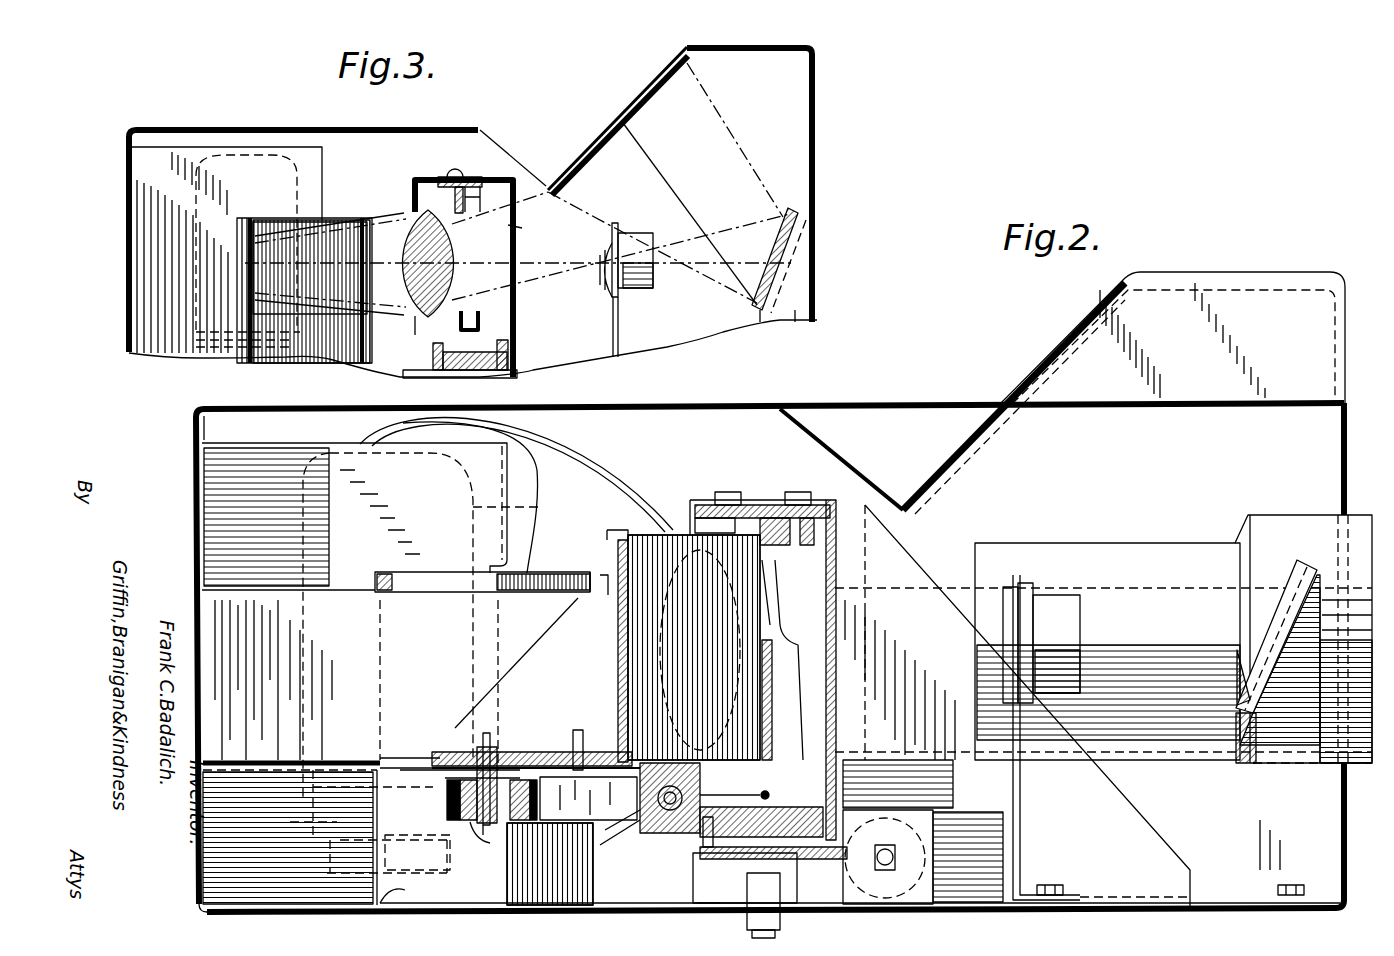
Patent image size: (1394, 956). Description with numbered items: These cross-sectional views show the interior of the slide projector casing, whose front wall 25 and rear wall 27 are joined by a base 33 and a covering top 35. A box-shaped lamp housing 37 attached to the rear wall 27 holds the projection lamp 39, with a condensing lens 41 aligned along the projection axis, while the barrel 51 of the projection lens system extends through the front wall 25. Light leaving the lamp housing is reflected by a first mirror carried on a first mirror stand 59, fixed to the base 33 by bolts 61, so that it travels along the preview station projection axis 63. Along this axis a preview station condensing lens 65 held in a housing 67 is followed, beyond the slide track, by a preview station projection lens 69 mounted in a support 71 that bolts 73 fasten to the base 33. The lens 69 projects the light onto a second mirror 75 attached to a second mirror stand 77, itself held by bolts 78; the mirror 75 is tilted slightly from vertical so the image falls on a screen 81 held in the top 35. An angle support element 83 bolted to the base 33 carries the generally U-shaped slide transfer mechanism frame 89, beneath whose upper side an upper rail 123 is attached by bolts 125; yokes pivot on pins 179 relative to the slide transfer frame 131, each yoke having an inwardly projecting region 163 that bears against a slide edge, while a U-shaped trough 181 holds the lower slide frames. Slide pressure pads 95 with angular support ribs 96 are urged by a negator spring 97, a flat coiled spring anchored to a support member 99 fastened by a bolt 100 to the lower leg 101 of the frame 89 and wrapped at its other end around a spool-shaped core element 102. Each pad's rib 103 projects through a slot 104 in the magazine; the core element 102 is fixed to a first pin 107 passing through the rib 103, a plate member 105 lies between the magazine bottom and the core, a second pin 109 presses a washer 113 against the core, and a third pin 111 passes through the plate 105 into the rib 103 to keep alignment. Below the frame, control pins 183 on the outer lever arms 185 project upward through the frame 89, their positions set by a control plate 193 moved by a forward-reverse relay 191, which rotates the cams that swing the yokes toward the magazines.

In FIG. 3, the front wall 25 is at (816, 208).
In FIG. 2, the front wall 25 is at (1347, 482).
In FIG. 3, the rear wall 27 is at (126, 206).
In FIG. 2, the rear wall 27 is at (190, 493).
In FIG. 2, the base 33 is at (993, 910).
In FIG. 3, the top 35 is at (390, 128).
In FIG. 2, the top 35 is at (780, 403).
In FIG. 2, the lamp housing 37 is at (315, 432).
In FIG. 3, the projection lamp 39 is at (305, 190).
In FIG. 2, the projection lamp 39 is at (480, 503).
In FIG. 2, the condensing lens 41 is at (546, 574).
In FIG. 2, the barrel 51 is at (1184, 543).
In FIG. 3, the first mirror stand 59 is at (372, 352).
In FIG. 2, the first mirror stand 59 is at (428, 574).
In FIG. 2, the bolts 61 is at (390, 898).
In FIG. 3, the preview station projection axis 63 is at (478, 270).
In FIG. 3, the preview station condensing lens 65 is at (452, 250).
In FIG. 2, the preview station condensing lens 65 is at (640, 685).
In FIG. 3, the housing 67 is at (428, 180).
In FIG. 3, the preview station projection lens 69 is at (645, 290).
In FIG. 2, the preview station projection lens 69 is at (1058, 597).
In FIG. 3, the support 71 is at (618, 340).
In FIG. 2, the support 71 is at (1022, 823).
In FIG. 2, the bolts 73 is at (1048, 884).
In FIG. 3, the second mirror 75 is at (757, 306).
In FIG. 2, the second mirror 75 is at (1318, 546).
In FIG. 3, the second mirror stand 77 is at (790, 325).
In FIG. 2, the second mirror stand 77 is at (1262, 800).
In FIG. 2, the bolts 78 is at (1280, 884).
In FIG. 3, the screen 81 is at (657, 85).
In FIG. 2, the screen 81 is at (1040, 358).
In FIG. 2, the angle support element 83 is at (908, 552).
In FIG. 3, the slide transfer mechanism frame 89 is at (494, 178).
In FIG. 2, the slide transfer mechanism frame 89 is at (822, 500).
In FIG. 2, the slide pressure pads 95 is at (608, 528).
In FIG. 2, the angular support ribs 96 is at (602, 575).
In FIG. 3, the negator spring 97 is at (516, 232).
In FIG. 2, the negator spring 97 is at (600, 845).
In FIG. 2, the support member 99 is at (620, 832).
In FIG. 2, the bolt 100 is at (660, 835).
In FIG. 2, the lower leg 101 is at (700, 842).
In FIG. 2, the core element 102 is at (450, 862).
In FIG. 2, the rib 103 is at (592, 795).
In FIG. 2, the slot 104 is at (430, 768).
In FIG. 2, the plate member 105 is at (440, 790).
In FIG. 2, the first pin 107 is at (483, 745).
In FIG. 2, the second pin 109 is at (465, 823).
In FIG. 2, the third pin 111 is at (573, 730).
In FIG. 2, the washer 113 is at (470, 822).
In FIG. 3, the upper rail 123 is at (480, 212).
In FIG. 2, the upper rail 123 is at (780, 548).
In FIG. 2, the bolts 125 is at (722, 492).
In FIG. 3, the slide transfer frame 131 is at (432, 357).
In FIG. 2, the inwardly projecting region 163 is at (780, 610).
In FIG. 2, the pins 179 is at (766, 793).
In FIG. 3, the U-shaped trough 181 is at (482, 322).
In FIG. 2, the control pins 183 is at (760, 796).
In FIG. 2, the outer lever arms 185 is at (746, 862).
In FIG. 2, the forward-reverse relay 191 is at (930, 812).
In FIG. 2, the control plate 193 is at (746, 888).